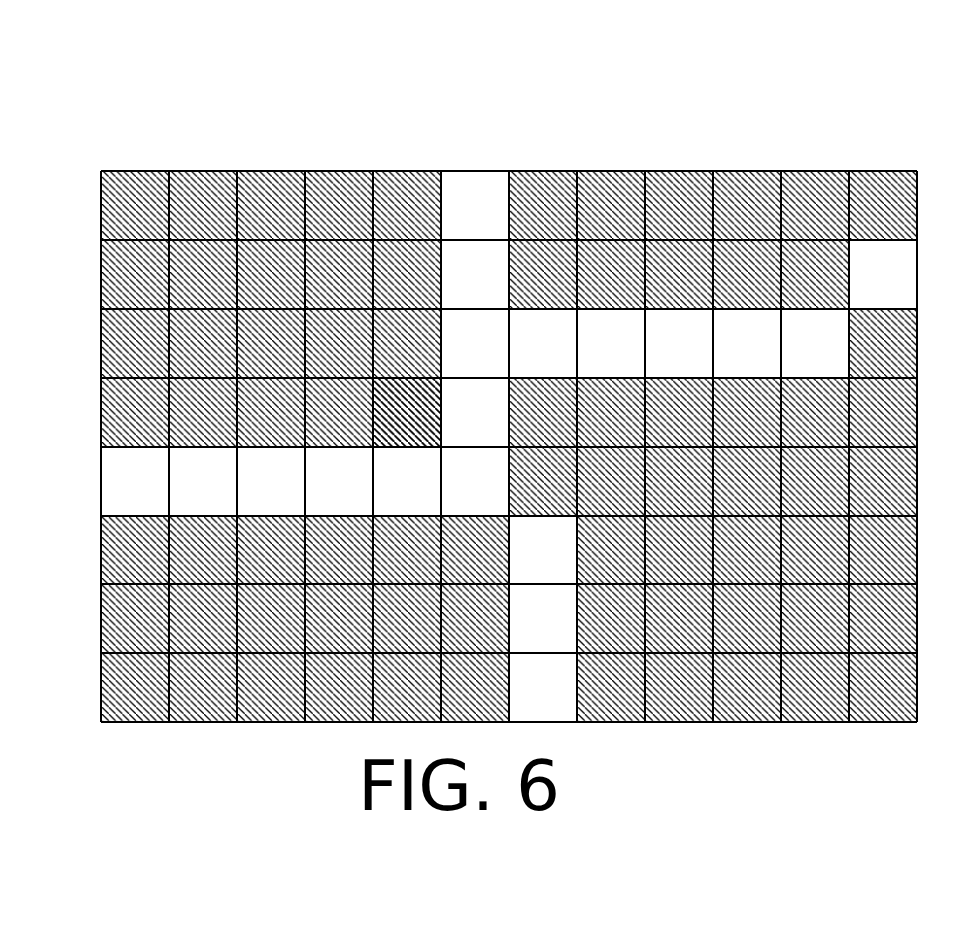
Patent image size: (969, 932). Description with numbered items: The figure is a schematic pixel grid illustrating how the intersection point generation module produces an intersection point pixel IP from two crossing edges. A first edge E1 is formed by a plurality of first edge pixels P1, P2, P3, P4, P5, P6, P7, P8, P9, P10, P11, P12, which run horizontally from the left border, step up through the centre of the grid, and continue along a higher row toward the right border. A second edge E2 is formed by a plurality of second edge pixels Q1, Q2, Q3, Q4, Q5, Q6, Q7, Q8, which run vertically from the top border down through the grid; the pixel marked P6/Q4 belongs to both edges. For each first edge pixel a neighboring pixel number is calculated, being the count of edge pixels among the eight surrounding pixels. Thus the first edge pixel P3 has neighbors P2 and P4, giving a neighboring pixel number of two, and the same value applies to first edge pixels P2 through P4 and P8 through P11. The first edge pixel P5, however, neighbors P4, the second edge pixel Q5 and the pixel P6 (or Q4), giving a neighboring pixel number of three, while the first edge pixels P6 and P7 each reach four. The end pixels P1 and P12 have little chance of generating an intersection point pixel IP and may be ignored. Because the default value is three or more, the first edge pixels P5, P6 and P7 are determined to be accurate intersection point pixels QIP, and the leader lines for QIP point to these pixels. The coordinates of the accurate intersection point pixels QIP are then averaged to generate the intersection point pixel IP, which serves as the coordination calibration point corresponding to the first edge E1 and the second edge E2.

The accurate intersection point pixel QIP is at (402, 447).
The intersection point pixel IP is at (437, 403).
The first edge E1 is at (101, 467).
The second edge E2 is at (481, 171).
The first edge pixel P1 is at (135, 481).
The first edge pixel P2 is at (203, 481).
The first edge pixel P3 is at (271, 481).
The first edge pixel P4 is at (339, 481).
The first edge pixel P5 is at (407, 481).
The first edge pixel P6 is at (475, 412).
The first edge pixel P7 is at (543, 343).
The first edge pixel P8 is at (611, 343).
The first edge pixel P9 is at (679, 343).
The first edge pixel P10 is at (747, 343).
The first edge pixel P11 is at (815, 343).
The first edge pixel P12 is at (883, 274).
The second edge pixel Q1 is at (475, 205).
The second edge pixel Q2 is at (475, 274).
The second edge pixel Q3 is at (475, 343).
The second edge pixel Q4 is at (475, 412).
The second edge pixel Q5 is at (475, 481).
The second edge pixel Q6 is at (543, 550).
The second edge pixel Q7 is at (543, 618).
The second edge pixel Q8 is at (543, 687).